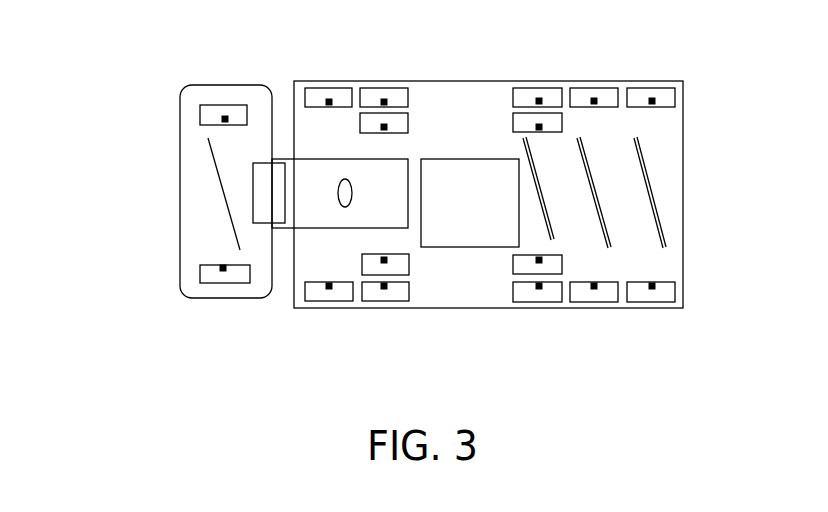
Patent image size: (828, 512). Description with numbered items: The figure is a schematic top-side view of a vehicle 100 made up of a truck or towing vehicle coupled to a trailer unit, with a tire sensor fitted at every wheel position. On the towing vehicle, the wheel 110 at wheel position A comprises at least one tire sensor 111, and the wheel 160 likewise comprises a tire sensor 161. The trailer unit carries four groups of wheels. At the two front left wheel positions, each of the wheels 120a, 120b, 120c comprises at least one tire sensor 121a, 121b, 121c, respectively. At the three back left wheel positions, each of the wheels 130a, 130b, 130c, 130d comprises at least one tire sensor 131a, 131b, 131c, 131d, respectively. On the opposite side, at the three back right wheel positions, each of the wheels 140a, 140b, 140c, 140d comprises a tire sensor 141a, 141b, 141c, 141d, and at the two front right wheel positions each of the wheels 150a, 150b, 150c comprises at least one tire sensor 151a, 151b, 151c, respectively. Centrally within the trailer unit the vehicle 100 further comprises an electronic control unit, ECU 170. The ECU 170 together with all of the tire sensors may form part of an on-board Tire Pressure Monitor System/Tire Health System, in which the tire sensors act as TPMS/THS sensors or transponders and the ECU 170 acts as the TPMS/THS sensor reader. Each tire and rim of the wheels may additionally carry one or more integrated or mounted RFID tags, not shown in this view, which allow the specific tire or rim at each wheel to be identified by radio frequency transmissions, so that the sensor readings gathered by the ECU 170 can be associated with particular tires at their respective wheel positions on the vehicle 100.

The vehicle 100 is at (154, 73).
The wheel 110 is at (230, 298).
The tire sensor 111 is at (223, 268).
The wheel 160 is at (224, 105).
The tire sensor 161 is at (226, 124).
The electronic control unit 170 is at (487, 201).
The wheel 120a is at (315, 301).
The wheel 120b is at (390, 302).
The wheel 120c is at (368, 281).
The tire sensor 121a is at (333, 284).
The tire sensor 121b is at (386, 286).
The tire sensor 121c is at (386, 260).
The wheel 130a is at (540, 303).
The wheel 130b is at (560, 300).
The wheel 130c is at (600, 303).
The wheel 130d is at (656, 303).
The tire sensor 131a is at (539, 286).
The tire sensor 131b is at (541, 258).
The tire sensor 131c is at (596, 286).
The tire sensor 131d is at (654, 286).
The wheel 140a is at (536, 88).
The wheel 140b is at (539, 127).
The wheel 140c is at (594, 88).
The wheel 140d is at (652, 88).
The tire sensor 141a is at (539, 101).
The tire sensor 141b is at (541, 131).
The tire sensor 141c is at (596, 105).
The tire sensor 141d is at (654, 105).
The wheel 150a is at (330, 87).
The wheel 150b is at (390, 87).
The wheel 150c is at (366, 110).
The tire sensor 151a is at (331, 105).
The tire sensor 151b is at (386, 102).
The tire sensor 151c is at (386, 128).